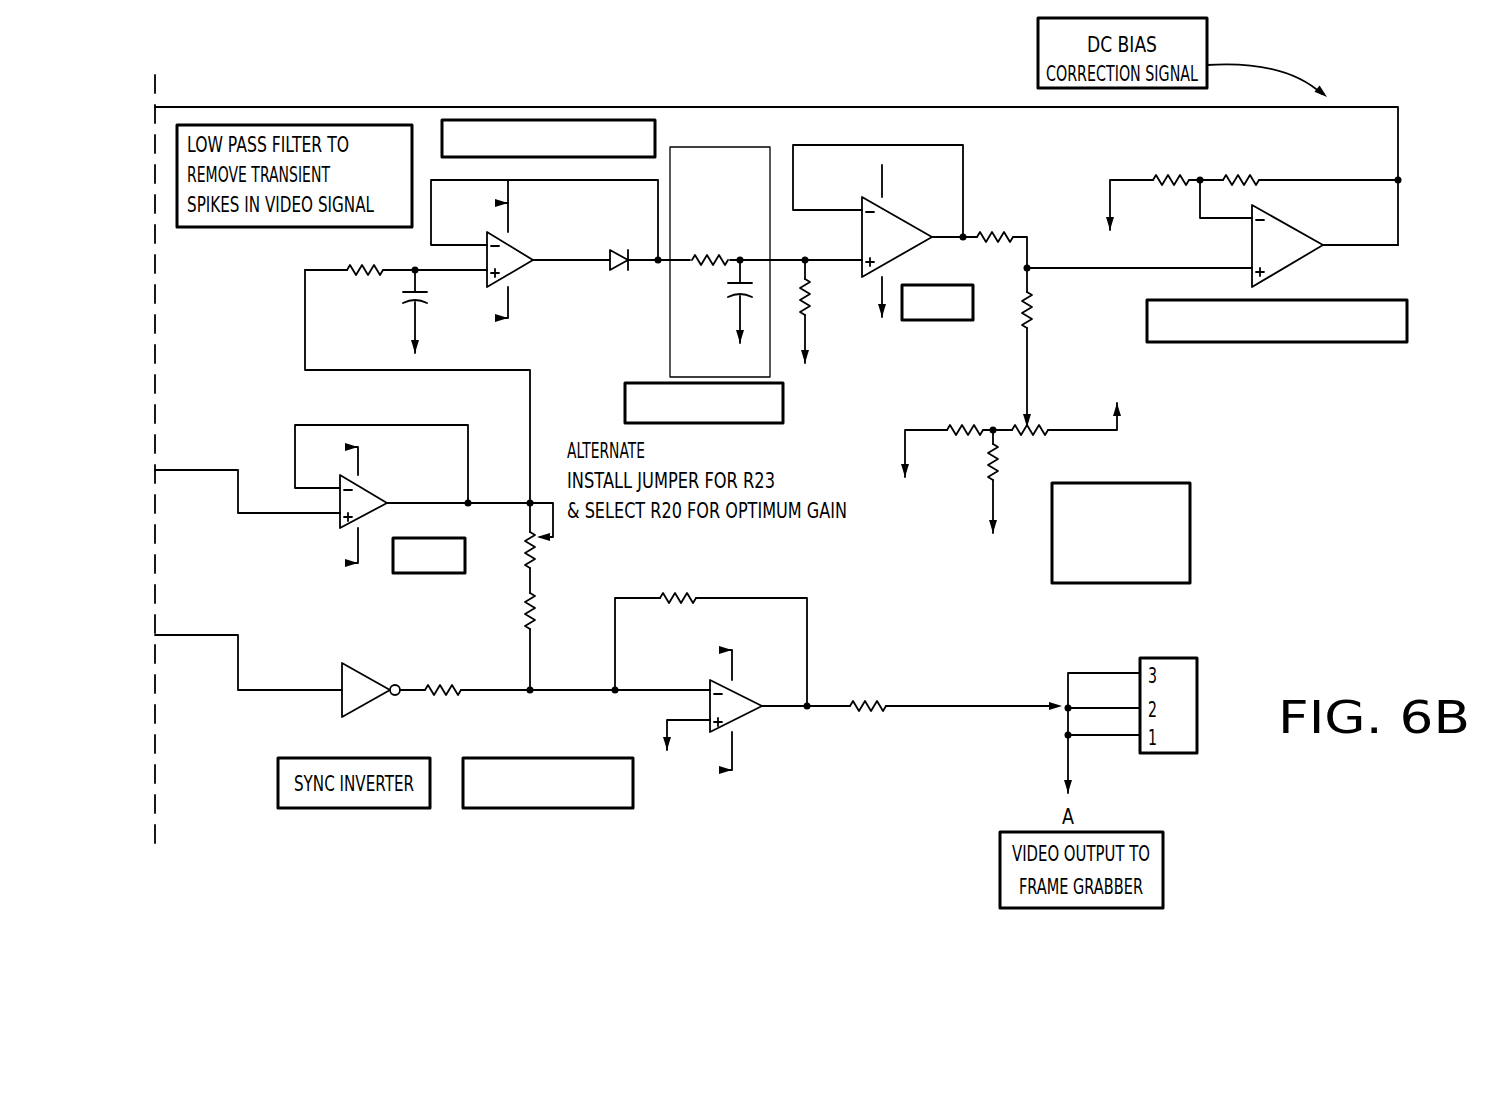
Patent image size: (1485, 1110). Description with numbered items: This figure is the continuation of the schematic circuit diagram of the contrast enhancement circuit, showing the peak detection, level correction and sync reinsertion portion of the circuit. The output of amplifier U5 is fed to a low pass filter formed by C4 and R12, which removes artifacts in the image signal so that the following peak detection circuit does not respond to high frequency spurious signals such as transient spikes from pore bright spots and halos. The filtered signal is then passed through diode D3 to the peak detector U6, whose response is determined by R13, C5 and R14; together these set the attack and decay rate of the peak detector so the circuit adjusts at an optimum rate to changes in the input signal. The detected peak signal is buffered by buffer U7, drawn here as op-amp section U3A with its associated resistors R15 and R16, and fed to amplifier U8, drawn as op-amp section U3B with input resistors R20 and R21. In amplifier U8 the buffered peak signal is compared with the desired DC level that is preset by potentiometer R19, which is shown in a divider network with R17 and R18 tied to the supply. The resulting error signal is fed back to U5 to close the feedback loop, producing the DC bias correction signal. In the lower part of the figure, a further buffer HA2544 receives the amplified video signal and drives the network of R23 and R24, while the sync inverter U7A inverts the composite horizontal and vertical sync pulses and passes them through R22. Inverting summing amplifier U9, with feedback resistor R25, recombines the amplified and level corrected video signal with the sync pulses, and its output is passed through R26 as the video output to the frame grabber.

The peak detector U6 is at (514, 108).
The amplifier U5 is at (544, 255).
The diode IN914 D3 is at (611, 229).
The low pass filter resistor R12 is at (396, 254).
The low pass filter capacitor C4 is at (371, 311).
The peak detector resistor R13 is at (767, 235).
The peak detector capacitor C5 is at (714, 307).
The peak detector resistor R14 is at (822, 332).
The buffer U7 is at (950, 328).
The operational amplifier MC34082 U3A is at (885, 248).
The resistor R15 is at (1114, 236).
The resistor 1K R16 is at (1010, 347).
The resistor 470R R17 is at (955, 439).
The resistor 4.7R R18 is at (969, 500).
The potentiometer R19 is at (1143, 636).
The amplifier U8 is at (1335, 348).
The operational amplifier U3B is at (1299, 233).
The resistor 1K R20 is at (1163, 191).
The resistor 1K R21 is at (1310, 154).
The buffer amplifier HA2544 is at (424, 502).
The potentiometer 2K R23 is at (506, 548).
The resistor 470R R24 is at (535, 639).
The sync inverter HC04 U7A is at (379, 695).
The resistor 2K R22 is at (561, 693).
The inverting summing amplifier U9 is at (590, 815).
The resistor 2K R25 is at (711, 621).
The resistor 75R R26 is at (954, 677).